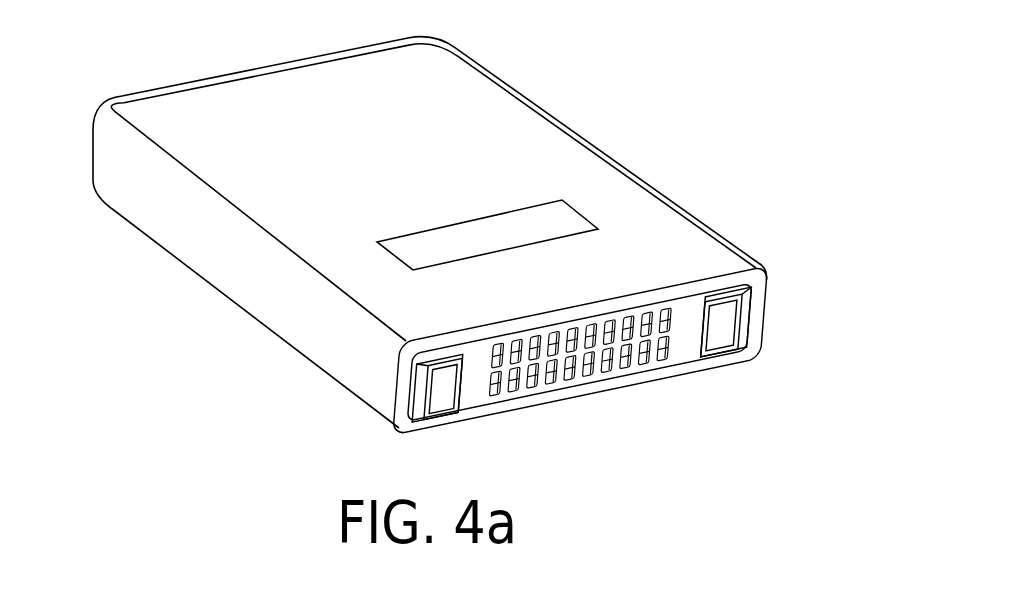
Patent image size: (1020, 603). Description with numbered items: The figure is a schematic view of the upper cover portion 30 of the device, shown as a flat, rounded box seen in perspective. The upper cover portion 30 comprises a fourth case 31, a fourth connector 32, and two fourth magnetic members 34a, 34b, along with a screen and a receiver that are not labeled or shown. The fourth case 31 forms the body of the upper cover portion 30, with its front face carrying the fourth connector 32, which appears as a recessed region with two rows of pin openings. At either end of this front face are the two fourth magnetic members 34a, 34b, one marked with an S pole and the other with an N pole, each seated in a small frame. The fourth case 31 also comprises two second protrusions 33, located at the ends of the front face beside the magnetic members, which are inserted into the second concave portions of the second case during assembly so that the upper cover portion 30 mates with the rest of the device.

The upper cover portion 30 is at (58, 36).
The fourth case 31 is at (262, 296).
The fourth connector 32 is at (687, 313).
The second protrusions 33 is at (748, 302).
The fourth magnetic member 34a is at (437, 380).
The fourth magnetic member 34b is at (732, 331).